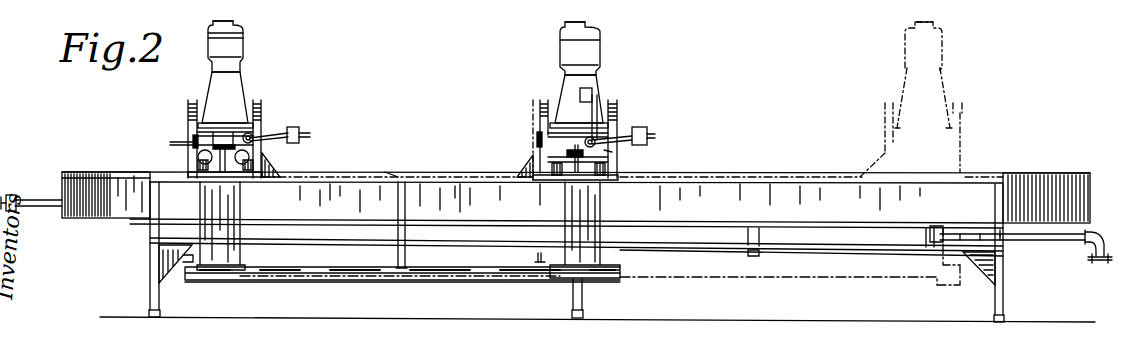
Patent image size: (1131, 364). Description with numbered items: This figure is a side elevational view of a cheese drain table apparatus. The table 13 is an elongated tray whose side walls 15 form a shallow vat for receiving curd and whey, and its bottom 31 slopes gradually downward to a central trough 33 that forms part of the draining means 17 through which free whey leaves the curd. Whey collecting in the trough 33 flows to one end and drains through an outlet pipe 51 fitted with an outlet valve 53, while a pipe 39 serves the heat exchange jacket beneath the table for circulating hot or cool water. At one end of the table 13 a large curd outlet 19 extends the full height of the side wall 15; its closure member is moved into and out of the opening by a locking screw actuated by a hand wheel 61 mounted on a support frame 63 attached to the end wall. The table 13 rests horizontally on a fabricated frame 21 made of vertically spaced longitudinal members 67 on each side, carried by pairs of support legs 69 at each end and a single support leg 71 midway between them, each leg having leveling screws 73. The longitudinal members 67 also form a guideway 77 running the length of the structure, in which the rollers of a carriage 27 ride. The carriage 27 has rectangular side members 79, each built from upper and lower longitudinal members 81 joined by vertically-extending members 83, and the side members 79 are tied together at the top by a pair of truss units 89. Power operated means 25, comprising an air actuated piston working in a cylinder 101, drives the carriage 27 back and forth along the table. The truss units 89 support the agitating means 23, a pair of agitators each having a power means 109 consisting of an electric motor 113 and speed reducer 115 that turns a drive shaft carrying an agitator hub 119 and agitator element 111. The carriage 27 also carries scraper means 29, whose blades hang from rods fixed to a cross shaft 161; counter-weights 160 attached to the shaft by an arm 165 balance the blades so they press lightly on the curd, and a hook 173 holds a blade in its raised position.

The table 13 is at (768, 178).
The side walls 15 is at (820, 172).
The draining means 17 is at (906, 247).
The curd outlet 19 is at (58, 172).
The frame 21 is at (147, 275).
The agitating means 23 is at (253, 50).
The power operated means 25 is at (358, 282).
The carriage 27 is at (268, 99).
The scraper means 29 is at (170, 146).
The bottom 31 is at (840, 224).
The central trough 33 is at (684, 241).
The outlet pipe 39 is at (964, 233).
The outlet pipe 51 is at (1092, 231).
The outlet valve 53 is at (1100, 262).
The hand wheel 61 is at (12, 195).
The support frame 63 is at (40, 208).
The longitudinal members 67 is at (150, 241).
The support legs 69 is at (160, 300).
The support leg 71 is at (584, 300).
The leveling screws 73 is at (148, 314).
The guideway 77 is at (176, 223).
The side members 79 is at (456, 176).
The longitudinal member 81 is at (345, 172).
The vertically-extending members 83 is at (199, 206).
The truss units 89 is at (195, 91).
The cylinder 101 is at (458, 282).
The power means 109 is at (242, 102).
The agitator element 111 is at (184, 164).
The electric motor 113 is at (210, 30).
The speed reducer 115 is at (212, 89).
The agitator hub 119 is at (275, 166).
The counter-weights 160 is at (300, 128).
The cross shaft 161 is at (253, 135).
The arm 165 is at (272, 133).
The hook 173 is at (193, 137).